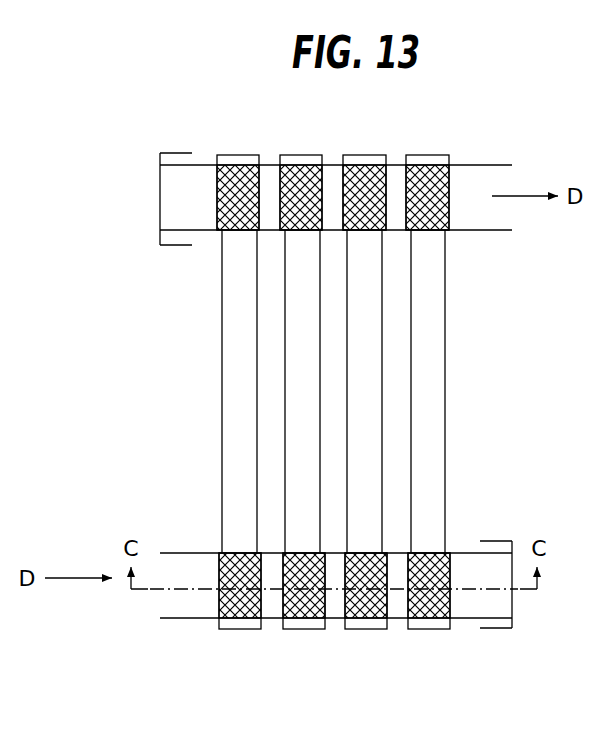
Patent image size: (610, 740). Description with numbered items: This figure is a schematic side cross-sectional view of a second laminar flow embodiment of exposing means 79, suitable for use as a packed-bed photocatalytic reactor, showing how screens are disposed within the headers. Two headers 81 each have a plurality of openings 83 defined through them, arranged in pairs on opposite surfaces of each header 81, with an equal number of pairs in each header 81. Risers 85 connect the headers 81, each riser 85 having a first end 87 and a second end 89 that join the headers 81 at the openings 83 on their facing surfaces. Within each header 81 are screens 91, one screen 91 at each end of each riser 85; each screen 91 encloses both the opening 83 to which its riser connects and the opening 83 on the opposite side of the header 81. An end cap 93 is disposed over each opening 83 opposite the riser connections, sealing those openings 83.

The exposing means 79 is at (459, 407).
The header 81 is at (181, 625).
The opening 83 is at (216, 161).
The riser 85 is at (221, 390).
The first end 87 is at (257, 235).
The second end 89 is at (258, 549).
The screen 91 is at (391, 606).
The end cap 93 is at (367, 634).